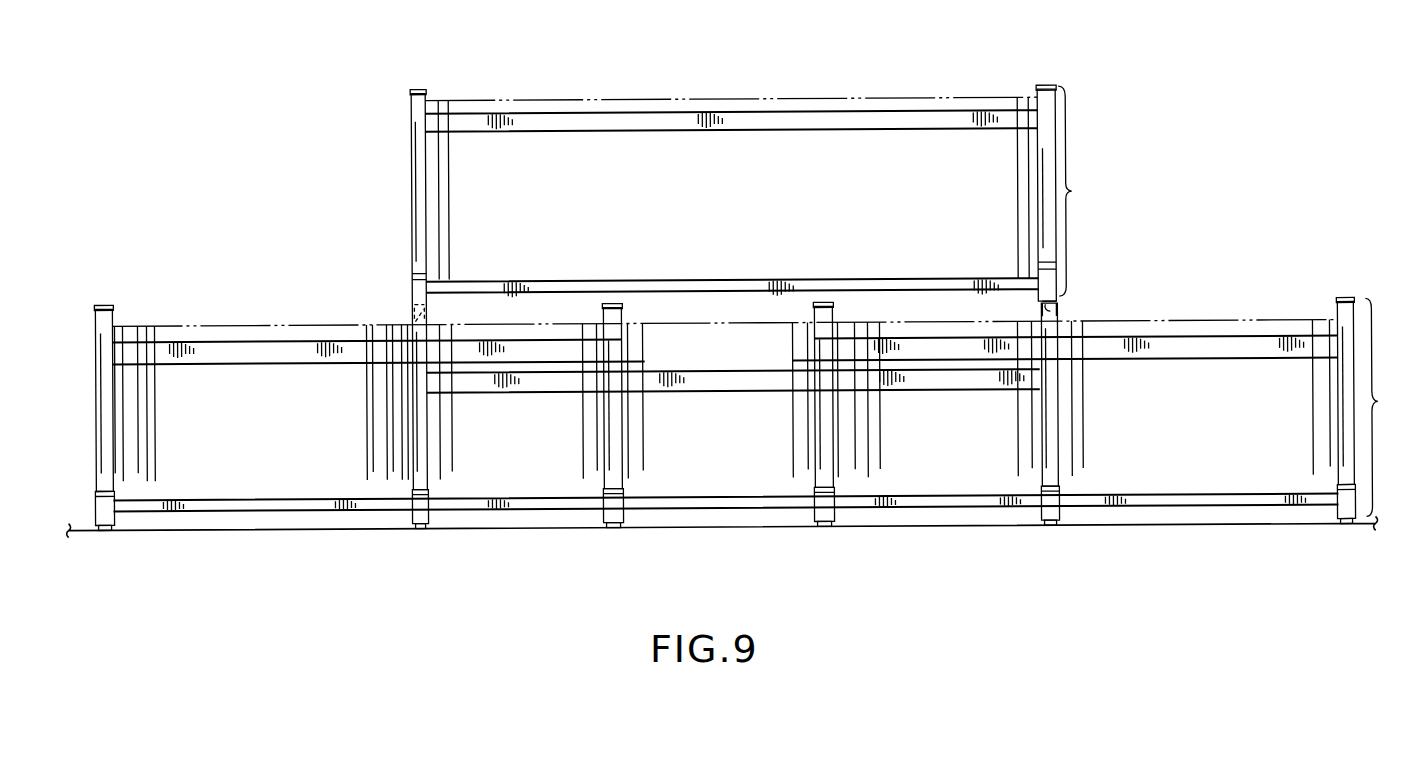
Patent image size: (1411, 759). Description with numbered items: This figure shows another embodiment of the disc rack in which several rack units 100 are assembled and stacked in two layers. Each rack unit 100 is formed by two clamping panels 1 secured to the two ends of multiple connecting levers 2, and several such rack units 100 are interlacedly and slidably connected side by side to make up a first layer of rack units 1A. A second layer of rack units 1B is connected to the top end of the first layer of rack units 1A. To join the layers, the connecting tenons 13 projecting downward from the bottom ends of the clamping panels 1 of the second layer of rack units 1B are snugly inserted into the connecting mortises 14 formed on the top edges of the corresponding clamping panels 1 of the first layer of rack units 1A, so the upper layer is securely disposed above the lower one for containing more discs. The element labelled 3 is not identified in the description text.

The clamping panel 1 is at (413, 176).
The first layer of rack units 1A is at (761, 410).
The second layer of rack units 1B is at (768, 193).
The connecting lever 2 is at (279, 346).
The vertical pipe 3 is at (150, 320).
The connecting tenon 13 is at (428, 298).
The connecting mortise 14 is at (408, 320).
The rack unit 100 is at (483, 102).